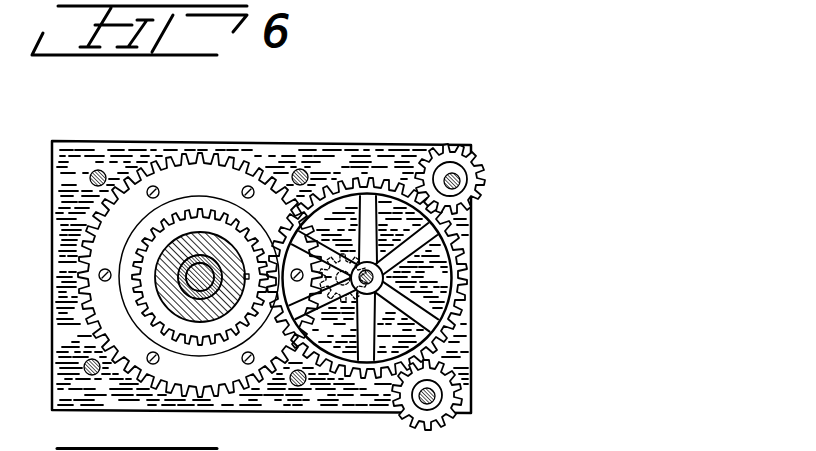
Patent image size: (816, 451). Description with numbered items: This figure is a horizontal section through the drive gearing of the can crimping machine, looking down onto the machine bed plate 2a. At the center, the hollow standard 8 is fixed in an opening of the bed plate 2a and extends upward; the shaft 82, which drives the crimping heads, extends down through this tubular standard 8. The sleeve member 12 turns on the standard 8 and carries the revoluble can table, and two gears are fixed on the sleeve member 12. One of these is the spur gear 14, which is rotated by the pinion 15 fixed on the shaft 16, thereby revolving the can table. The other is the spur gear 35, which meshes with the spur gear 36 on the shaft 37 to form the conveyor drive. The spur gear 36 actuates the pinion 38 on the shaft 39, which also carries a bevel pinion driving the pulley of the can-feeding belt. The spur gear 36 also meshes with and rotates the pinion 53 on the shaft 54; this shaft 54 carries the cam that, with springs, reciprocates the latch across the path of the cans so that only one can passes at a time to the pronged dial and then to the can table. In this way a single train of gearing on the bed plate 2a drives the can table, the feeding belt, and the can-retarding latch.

The machine bed plate 2a is at (466, 335).
The hollow standard 8 is at (178, 281).
The sleeve member 12 is at (212, 322).
The spur gear 14 is at (208, 396).
The pinion 15 is at (365, 229).
The shaft 16 is at (365, 326).
The spur gear 35 is at (152, 313).
The spur gear 36 is at (395, 278).
The shaft 37 is at (372, 290).
The pinion 38 is at (458, 398).
The shaft 39 is at (436, 392).
The pinion 53 is at (482, 175).
The shaft 54 is at (456, 183).
The shaft 82 is at (186, 266).